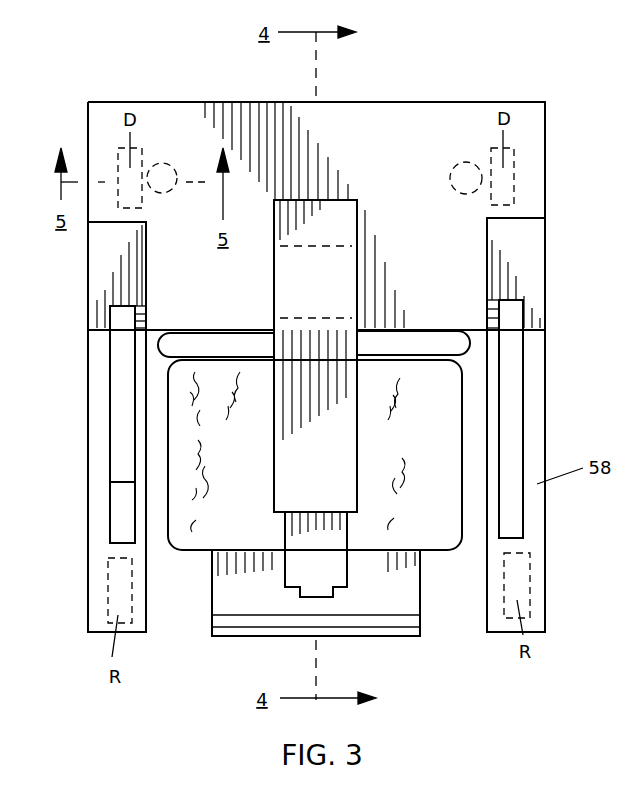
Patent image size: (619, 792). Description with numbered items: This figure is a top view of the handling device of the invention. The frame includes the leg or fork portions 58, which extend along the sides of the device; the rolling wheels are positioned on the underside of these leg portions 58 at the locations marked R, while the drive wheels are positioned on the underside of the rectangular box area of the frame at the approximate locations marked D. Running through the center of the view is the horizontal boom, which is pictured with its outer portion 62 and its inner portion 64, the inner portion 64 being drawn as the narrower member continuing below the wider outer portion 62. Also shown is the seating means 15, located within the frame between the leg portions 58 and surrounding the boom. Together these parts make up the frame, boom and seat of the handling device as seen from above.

The seating means 15 is at (237, 466).
The leg or fork portions 58 is at (93, 503).
The outer portion of the horizontal boom 62 is at (327, 435).
The inner portion of the horizontal boom 64 is at (322, 562).